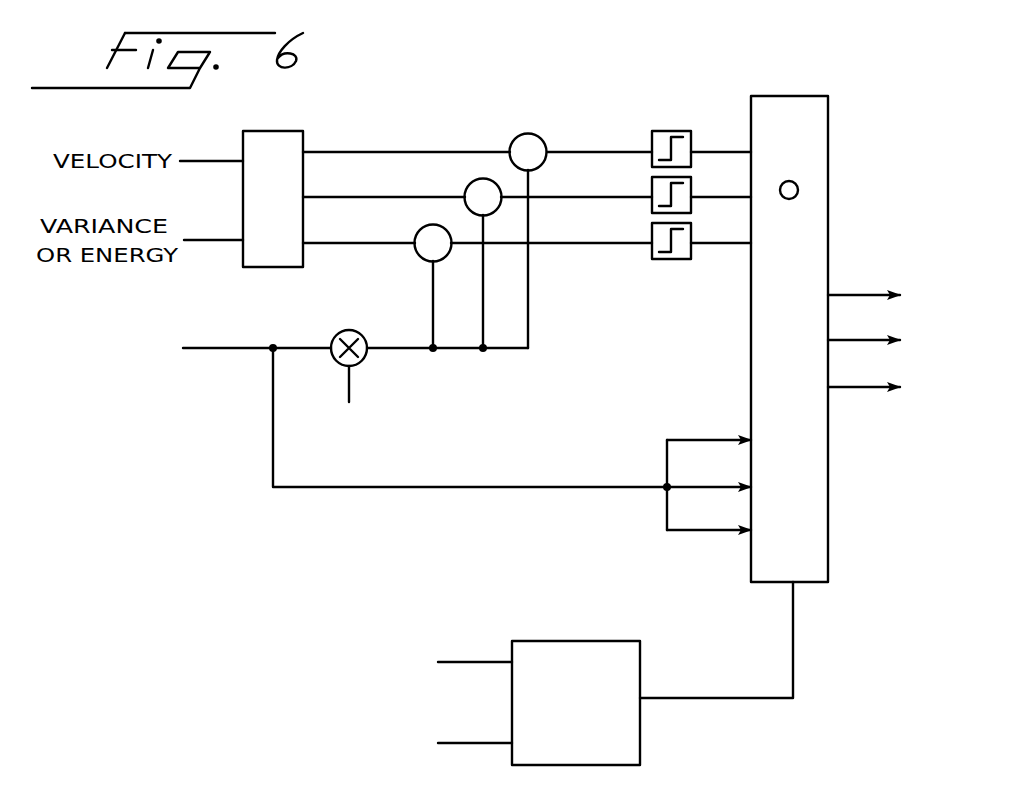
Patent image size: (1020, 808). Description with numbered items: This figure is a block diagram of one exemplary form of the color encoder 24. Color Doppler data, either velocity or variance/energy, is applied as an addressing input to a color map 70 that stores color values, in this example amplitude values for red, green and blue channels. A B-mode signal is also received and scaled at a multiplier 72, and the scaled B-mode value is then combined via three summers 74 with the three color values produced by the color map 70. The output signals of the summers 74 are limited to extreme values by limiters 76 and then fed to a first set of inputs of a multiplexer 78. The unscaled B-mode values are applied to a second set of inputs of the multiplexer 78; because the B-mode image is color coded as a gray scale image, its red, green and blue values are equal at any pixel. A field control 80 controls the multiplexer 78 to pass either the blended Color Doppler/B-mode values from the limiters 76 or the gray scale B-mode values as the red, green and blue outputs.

The color encoder 24 is at (398, 573).
The color map 70 is at (257, 268).
The multiplier 72 is at (340, 333).
The summers 74 is at (532, 134).
The limiters 76 is at (677, 131).
The multiplexer 78 is at (828, 146).
The field control 80 is at (607, 641).